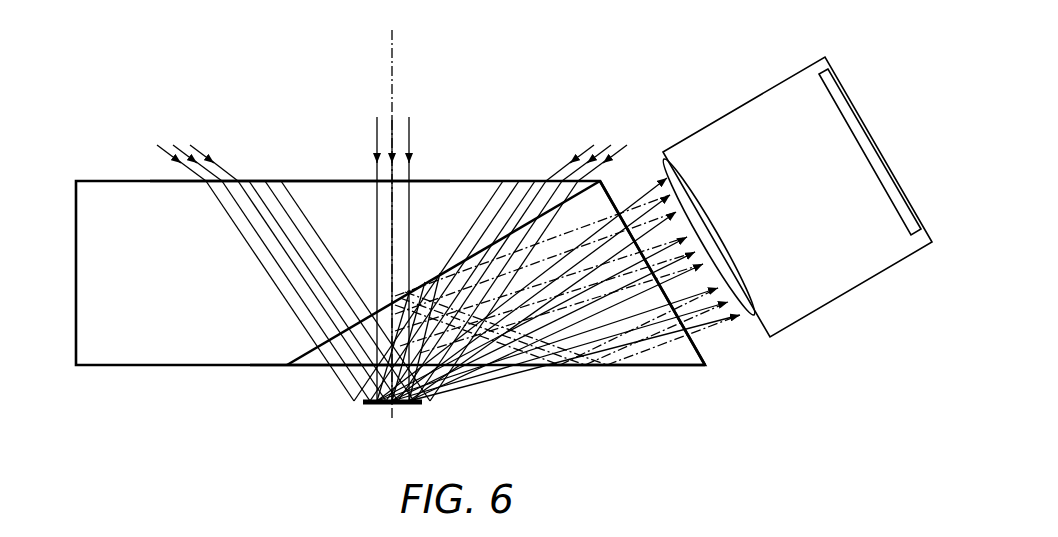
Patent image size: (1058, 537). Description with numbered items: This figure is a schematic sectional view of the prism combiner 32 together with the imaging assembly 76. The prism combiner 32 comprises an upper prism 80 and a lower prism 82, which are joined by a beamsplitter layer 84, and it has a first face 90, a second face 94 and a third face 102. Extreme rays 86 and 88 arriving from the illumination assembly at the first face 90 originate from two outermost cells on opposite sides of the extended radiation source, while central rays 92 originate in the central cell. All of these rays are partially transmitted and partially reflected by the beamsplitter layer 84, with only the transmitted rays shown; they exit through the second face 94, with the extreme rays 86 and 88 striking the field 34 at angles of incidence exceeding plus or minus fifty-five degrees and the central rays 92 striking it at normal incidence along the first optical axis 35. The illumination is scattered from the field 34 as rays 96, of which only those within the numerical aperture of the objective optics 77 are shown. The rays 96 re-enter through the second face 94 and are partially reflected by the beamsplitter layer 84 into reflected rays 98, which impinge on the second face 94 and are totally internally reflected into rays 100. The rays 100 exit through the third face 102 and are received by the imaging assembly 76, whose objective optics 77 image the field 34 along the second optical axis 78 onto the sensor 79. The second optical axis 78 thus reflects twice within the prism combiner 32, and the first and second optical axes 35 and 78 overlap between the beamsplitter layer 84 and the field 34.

The prism combiner 32 is at (647, 77).
The field 34 is at (413, 405).
The first optical axis 35 is at (396, 45).
The imaging assembly 76 is at (793, 88).
The objective optics 77 is at (752, 282).
The second optical axis 78 is at (605, 367).
The sensor 79 is at (905, 240).
The upper prism 80 is at (107, 318).
The lower prism 82 is at (672, 353).
The beamsplitter layer 84 is at (308, 357).
The extreme rays 86 is at (203, 158).
The extreme rays 88 is at (600, 147).
The first face 90 is at (297, 181).
The central rays 92 is at (374, 118).
The second face 94 is at (572, 367).
The rays 96 is at (362, 403).
The reflected rays 98 is at (445, 292).
The rays 100 is at (637, 333).
The third face 102 is at (700, 343).